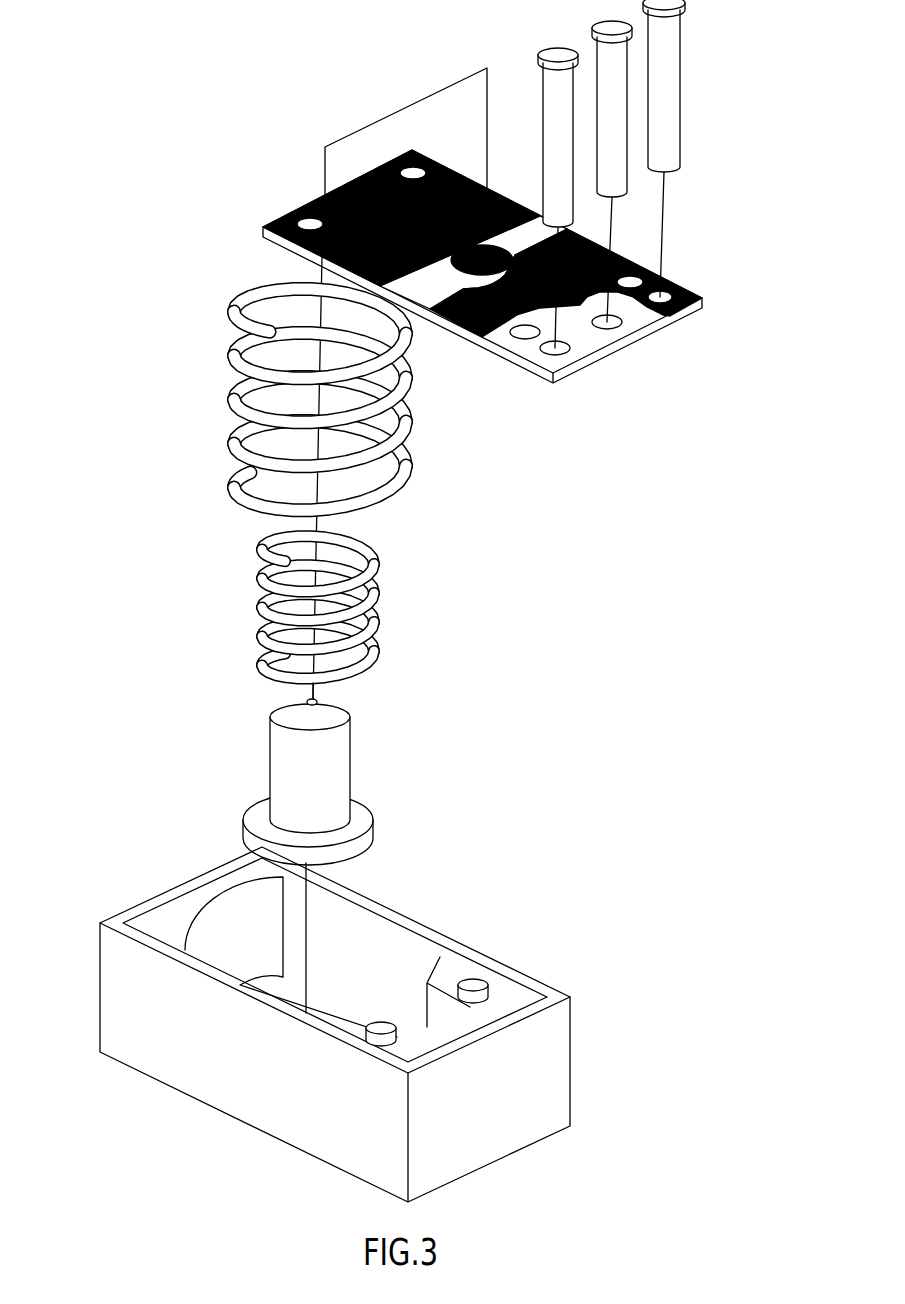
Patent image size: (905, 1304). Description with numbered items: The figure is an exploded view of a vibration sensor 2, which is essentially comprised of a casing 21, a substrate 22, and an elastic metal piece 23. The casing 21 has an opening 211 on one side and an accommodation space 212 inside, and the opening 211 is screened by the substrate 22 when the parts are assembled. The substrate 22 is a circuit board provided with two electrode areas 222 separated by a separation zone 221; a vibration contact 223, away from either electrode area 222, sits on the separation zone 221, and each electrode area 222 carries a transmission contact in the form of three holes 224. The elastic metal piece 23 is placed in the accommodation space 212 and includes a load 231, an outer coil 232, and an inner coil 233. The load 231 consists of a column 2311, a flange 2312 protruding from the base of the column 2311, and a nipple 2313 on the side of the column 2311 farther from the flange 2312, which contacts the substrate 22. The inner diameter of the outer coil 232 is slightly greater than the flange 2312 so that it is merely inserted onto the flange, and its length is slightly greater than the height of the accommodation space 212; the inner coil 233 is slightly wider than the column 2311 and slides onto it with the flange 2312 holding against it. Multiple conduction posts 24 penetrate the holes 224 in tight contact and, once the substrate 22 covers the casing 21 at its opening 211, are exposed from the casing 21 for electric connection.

The vibration sensor 2 is at (86, 214).
The casing 21 is at (363, 1024).
The opening 211 is at (450, 957).
The accommodation space 212 is at (217, 930).
The substrate 22 is at (471, 273).
The separation zone 221 is at (430, 295).
The electrode area 222 is at (366, 170).
The vibration contact 223 is at (482, 276).
The holes 224 is at (556, 356).
The elastic metal piece 23 is at (213, 463).
The load 231 is at (319, 771).
The column 2311 is at (342, 753).
The flange 2312 is at (367, 841).
The nipple 2313 is at (317, 699).
The outer coil 232 is at (248, 356).
The inner coil 233 is at (380, 588).
The conduction posts 24 is at (618, 100).